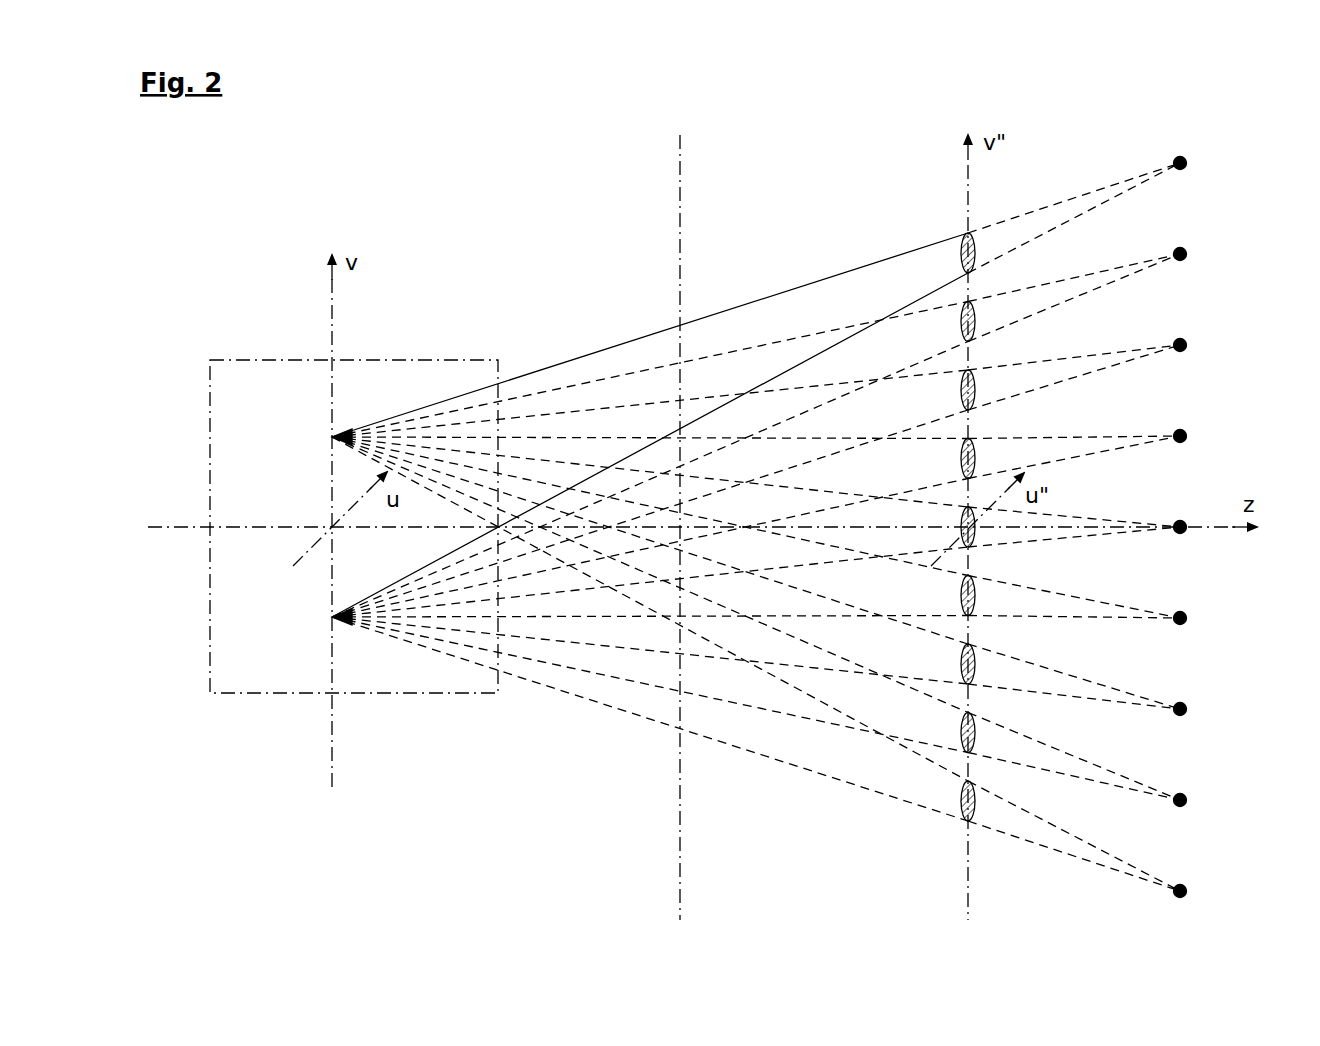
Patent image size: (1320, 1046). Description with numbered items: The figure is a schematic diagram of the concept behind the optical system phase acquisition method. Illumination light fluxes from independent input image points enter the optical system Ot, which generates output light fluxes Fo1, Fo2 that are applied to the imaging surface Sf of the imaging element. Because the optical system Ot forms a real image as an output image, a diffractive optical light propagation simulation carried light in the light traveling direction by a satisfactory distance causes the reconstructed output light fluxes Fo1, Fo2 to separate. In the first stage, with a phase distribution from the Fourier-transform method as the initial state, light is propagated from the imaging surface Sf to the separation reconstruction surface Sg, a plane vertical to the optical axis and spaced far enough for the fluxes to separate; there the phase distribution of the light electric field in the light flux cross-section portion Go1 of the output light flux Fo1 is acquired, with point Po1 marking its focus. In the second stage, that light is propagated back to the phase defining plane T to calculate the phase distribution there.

The optical system Ot is at (230, 360).
The phase defining plane T is at (332, 740).
The imaging surface Sf is at (680, 853).
The separation reconstruction surface Sg is at (968, 855).
The light flux cross-section portion Go1 is at (963, 250).
The output light flux Fo1 is at (1020, 215).
The output light flux Fo2 is at (1020, 290).
The first image point Po1 is at (1187, 163).